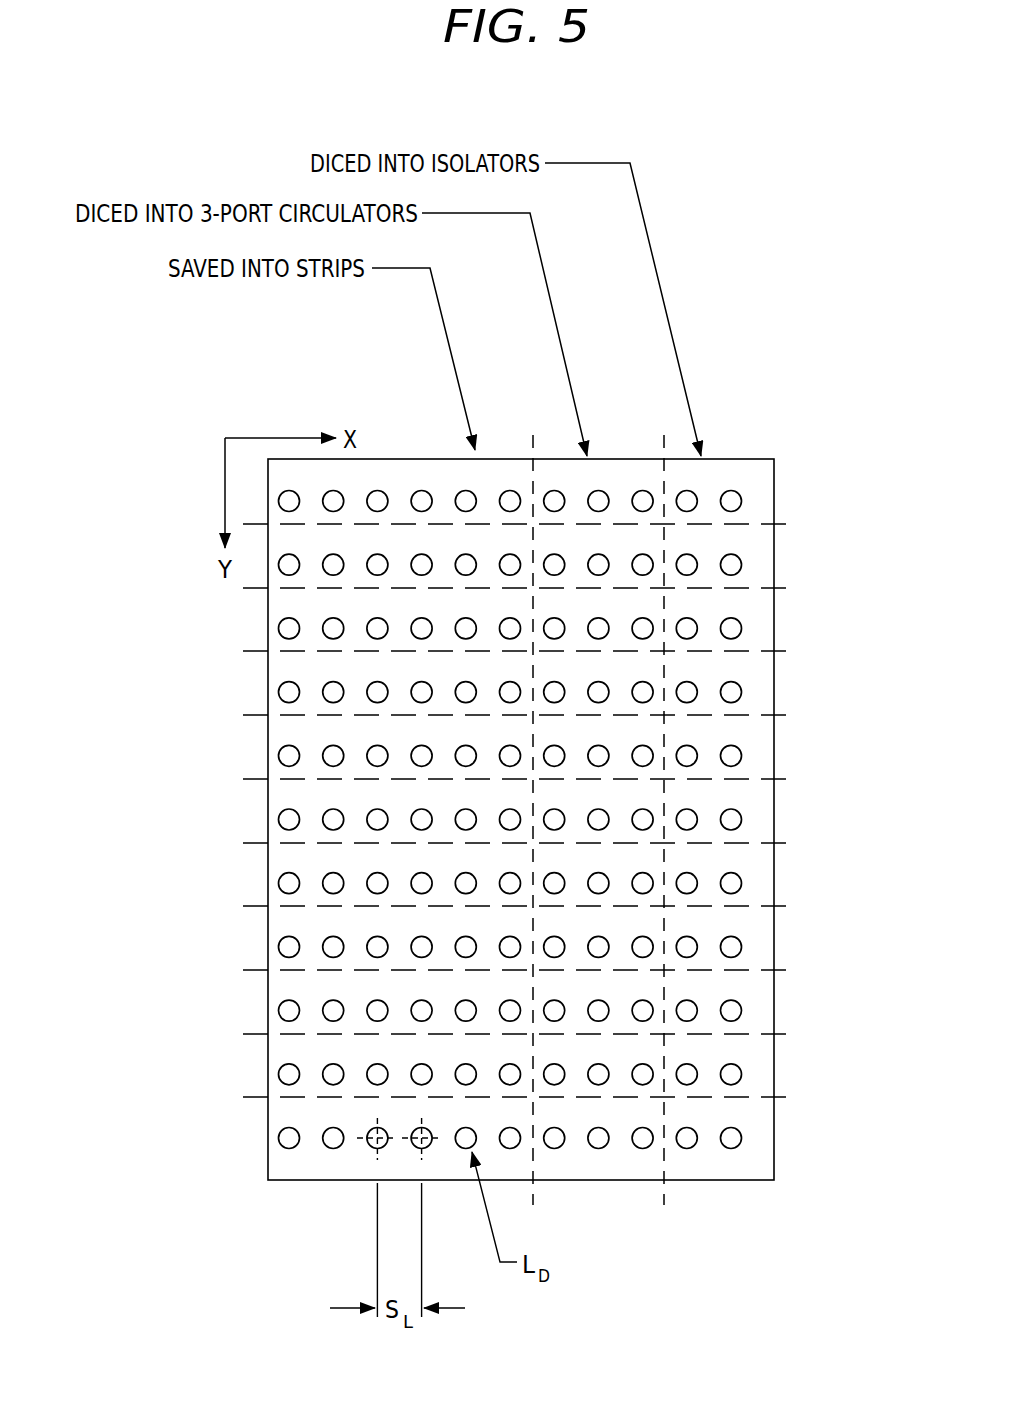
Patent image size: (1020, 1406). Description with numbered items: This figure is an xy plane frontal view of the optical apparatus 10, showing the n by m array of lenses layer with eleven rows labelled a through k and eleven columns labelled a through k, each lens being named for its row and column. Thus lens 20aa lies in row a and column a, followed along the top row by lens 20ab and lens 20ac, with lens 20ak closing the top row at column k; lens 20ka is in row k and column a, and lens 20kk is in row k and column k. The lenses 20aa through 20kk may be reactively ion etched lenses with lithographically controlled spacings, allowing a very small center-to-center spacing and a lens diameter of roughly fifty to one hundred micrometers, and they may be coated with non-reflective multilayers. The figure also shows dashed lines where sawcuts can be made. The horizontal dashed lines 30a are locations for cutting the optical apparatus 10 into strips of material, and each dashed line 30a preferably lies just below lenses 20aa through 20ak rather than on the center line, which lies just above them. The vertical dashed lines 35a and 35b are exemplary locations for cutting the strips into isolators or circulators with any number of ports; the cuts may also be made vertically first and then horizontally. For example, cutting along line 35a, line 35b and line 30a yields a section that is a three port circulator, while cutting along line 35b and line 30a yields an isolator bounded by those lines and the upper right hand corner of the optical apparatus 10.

The optical apparatus 10 is at (749, 294).
The lens 20aa is at (289, 500).
The lens 20ab is at (378, 500).
The lens 20ac is at (421, 500).
The lens 20ak is at (731, 500).
The lens 20ka is at (289, 1139).
The lens 20kk is at (731, 1139).
The dashed line 30a is at (790, 523).
The dashed line 35a is at (532, 445).
The dashed line 35b is at (663, 445).